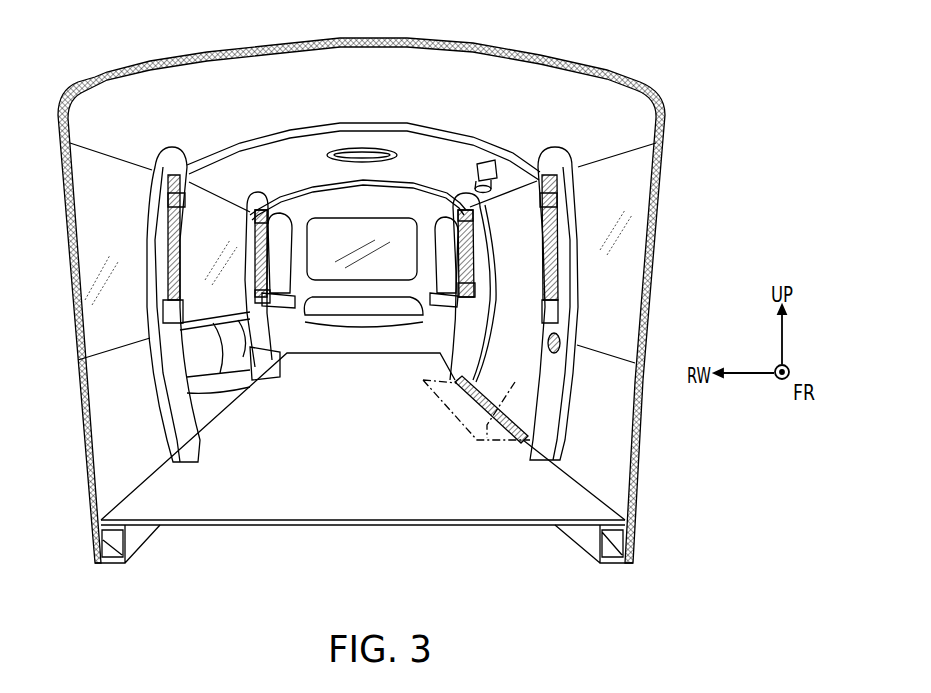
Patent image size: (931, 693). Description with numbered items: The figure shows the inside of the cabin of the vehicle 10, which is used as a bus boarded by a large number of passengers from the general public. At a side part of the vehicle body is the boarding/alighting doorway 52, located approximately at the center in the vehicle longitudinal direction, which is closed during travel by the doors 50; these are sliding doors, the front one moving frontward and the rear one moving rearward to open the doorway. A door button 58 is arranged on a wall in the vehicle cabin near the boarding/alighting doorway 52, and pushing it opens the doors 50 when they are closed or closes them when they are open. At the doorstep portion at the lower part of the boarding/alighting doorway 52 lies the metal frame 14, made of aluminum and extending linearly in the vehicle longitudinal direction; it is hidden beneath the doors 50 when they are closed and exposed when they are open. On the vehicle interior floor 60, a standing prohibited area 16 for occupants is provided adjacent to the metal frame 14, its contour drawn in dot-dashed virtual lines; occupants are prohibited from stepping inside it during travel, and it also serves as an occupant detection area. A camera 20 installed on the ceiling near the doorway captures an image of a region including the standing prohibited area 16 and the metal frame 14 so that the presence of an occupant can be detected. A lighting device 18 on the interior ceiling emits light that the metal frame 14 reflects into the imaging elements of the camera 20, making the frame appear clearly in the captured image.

The vehicle 10 is at (361, 300).
The metal frame 14 is at (483, 403).
The standing prohibited area 16 is at (477, 398).
The lighting device 18 is at (327, 156).
The camera 20 is at (478, 170).
The door 50 is at (491, 297).
The boarding/alighting doorway 52 is at (540, 185).
The door button 58 is at (553, 353).
The vehicle interior floor 60 is at (378, 430).